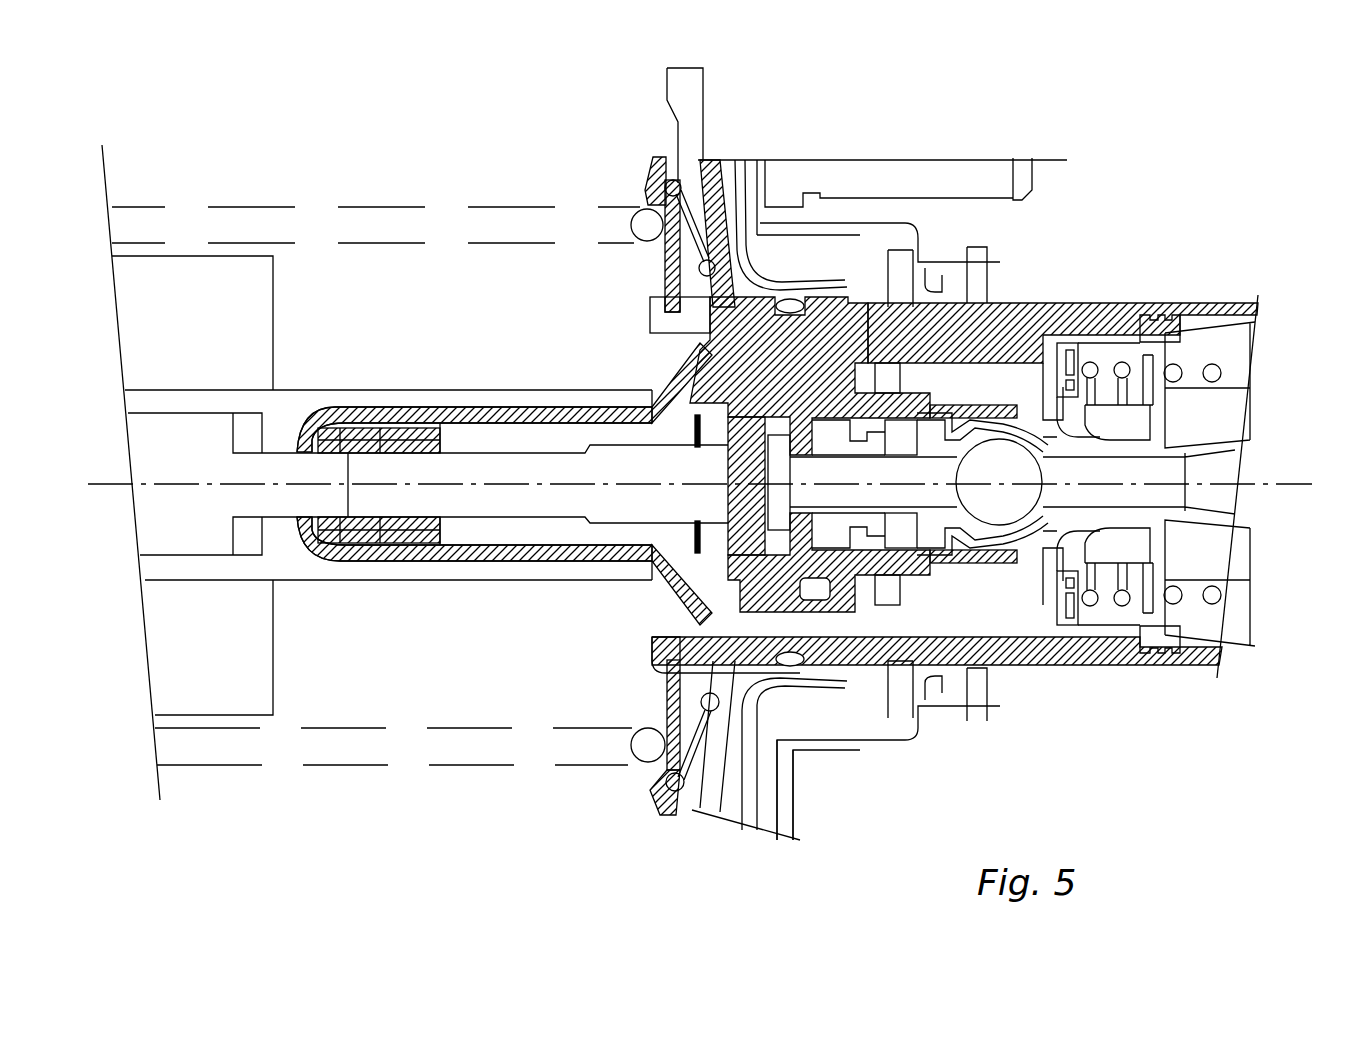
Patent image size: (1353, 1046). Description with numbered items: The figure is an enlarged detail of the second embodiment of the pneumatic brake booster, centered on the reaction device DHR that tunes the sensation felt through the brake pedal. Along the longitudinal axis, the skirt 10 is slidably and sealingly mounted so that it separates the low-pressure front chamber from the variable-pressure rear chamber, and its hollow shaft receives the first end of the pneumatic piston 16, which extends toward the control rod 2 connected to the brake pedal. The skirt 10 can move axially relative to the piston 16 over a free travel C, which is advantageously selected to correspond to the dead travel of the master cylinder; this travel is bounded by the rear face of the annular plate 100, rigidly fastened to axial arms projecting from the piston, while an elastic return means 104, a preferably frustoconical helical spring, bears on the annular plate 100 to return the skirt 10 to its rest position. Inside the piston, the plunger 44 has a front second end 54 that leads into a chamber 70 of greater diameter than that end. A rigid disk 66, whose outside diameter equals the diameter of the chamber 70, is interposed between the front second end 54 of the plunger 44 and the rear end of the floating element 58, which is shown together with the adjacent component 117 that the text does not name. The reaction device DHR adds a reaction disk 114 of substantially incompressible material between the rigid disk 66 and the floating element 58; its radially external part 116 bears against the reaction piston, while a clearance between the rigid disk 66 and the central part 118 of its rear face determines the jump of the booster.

The control rod 2 is at (1168, 472).
The skirt 10 is at (760, 430).
The pneumatic piston 16 is at (1113, 298).
The plunger 44 is at (816, 525).
The front second end of the plunger 54 is at (800, 545).
The floating element 58 is at (511, 535).
The rigid disk 66 is at (800, 425).
The chamber 70 is at (779, 440).
The annular plate 100 is at (636, 780).
The elastic return means 104 is at (676, 792).
The reaction disk 114 is at (745, 500).
The radially external part of the rear face of the reaction disk 116 is at (778, 832).
The conical sleeve 117 is at (690, 430).
The central part of the rear face of the reaction disk 118 is at (768, 440).
The free travel of the skirt C is at (668, 70).
The reaction device DHR is at (518, 364).